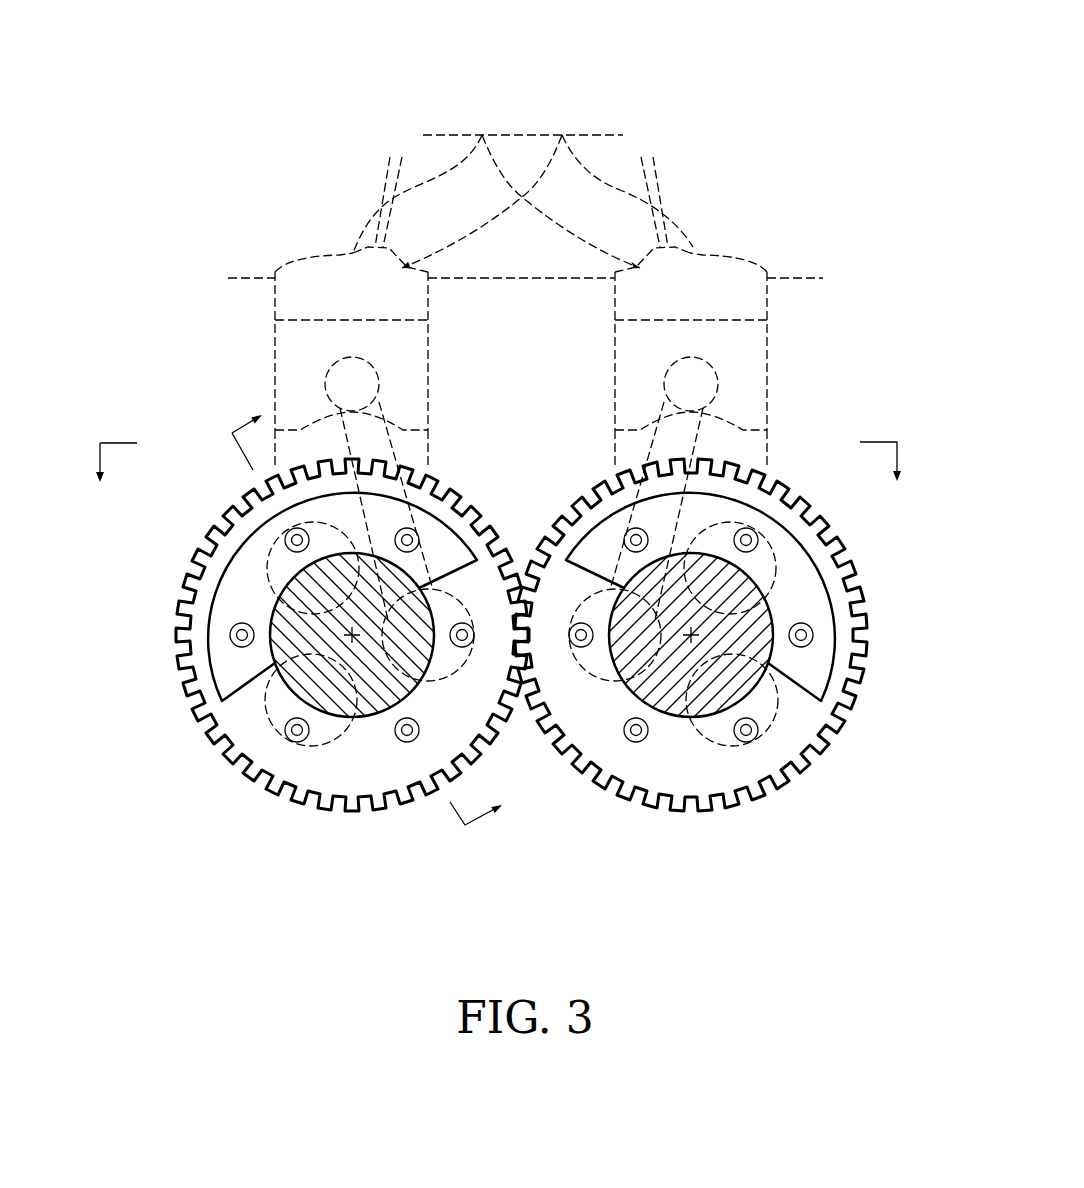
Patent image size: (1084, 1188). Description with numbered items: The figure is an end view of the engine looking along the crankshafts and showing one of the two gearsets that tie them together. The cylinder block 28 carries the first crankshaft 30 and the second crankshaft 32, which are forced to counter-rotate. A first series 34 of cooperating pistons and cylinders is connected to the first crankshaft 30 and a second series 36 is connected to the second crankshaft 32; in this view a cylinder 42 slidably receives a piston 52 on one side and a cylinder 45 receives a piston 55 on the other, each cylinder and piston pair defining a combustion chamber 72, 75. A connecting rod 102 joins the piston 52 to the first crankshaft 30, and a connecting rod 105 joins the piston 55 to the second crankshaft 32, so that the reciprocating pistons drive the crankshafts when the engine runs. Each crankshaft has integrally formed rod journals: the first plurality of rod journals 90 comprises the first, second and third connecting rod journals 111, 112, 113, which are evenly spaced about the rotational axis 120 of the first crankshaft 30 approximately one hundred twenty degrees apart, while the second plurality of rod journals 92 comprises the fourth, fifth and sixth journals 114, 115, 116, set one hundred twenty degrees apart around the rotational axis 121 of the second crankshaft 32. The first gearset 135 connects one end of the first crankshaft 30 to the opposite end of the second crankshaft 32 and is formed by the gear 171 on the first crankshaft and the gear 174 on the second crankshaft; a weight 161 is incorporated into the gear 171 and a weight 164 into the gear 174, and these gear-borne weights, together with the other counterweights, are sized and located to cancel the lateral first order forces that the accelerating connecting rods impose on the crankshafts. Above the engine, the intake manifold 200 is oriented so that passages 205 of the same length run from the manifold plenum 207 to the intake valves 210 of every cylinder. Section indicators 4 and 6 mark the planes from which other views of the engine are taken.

The cylinder block 28 is at (797, 270).
The first crankshaft 30 is at (306, 677).
The second crankshaft 32 is at (724, 677).
The first series of cooperating pistons and cylinders 34 is at (279, 379).
The second series of cooperating pistons and cylinders 36 is at (743, 370).
The cylinder 42 is at (275, 443).
The cylinder 45 is at (767, 464).
The piston 52 is at (282, 313).
The piston 55 is at (751, 341).
The combustion chamber 72 is at (310, 283).
The combustion chamber 75 is at (741, 295).
The first plurality of rod journals 90 is at (327, 664).
The second plurality of rod journals 92 is at (776, 727).
The connecting rod 102 is at (390, 448).
The connecting rod 105 is at (653, 445).
The first connecting rod journal 111 is at (263, 553).
The second connecting rod journal 112 is at (455, 683).
The third connecting rod journal 113 is at (332, 747).
The fourth journal 114 is at (770, 790).
The fifth journal 115 is at (600, 690).
The sixth journal 116 is at (777, 568).
The rotational axis of the first crankshaft 120 is at (273, 655).
The rotational axis of the second crankshaft 121 is at (775, 645).
The first gearset 135 is at (277, 787).
The weight 161 is at (387, 767).
The weight 164 is at (693, 752).
The gear 171 is at (180, 607).
The gear 174 is at (867, 673).
The intake manifold 200 is at (542, 135).
The passages 205 is at (602, 180).
The manifold plenum 207 is at (512, 143).
The intake valves 210 is at (652, 182).
The section line 4- 4 is at (499, 456).
The section line 6- 6 is at (357, 629).